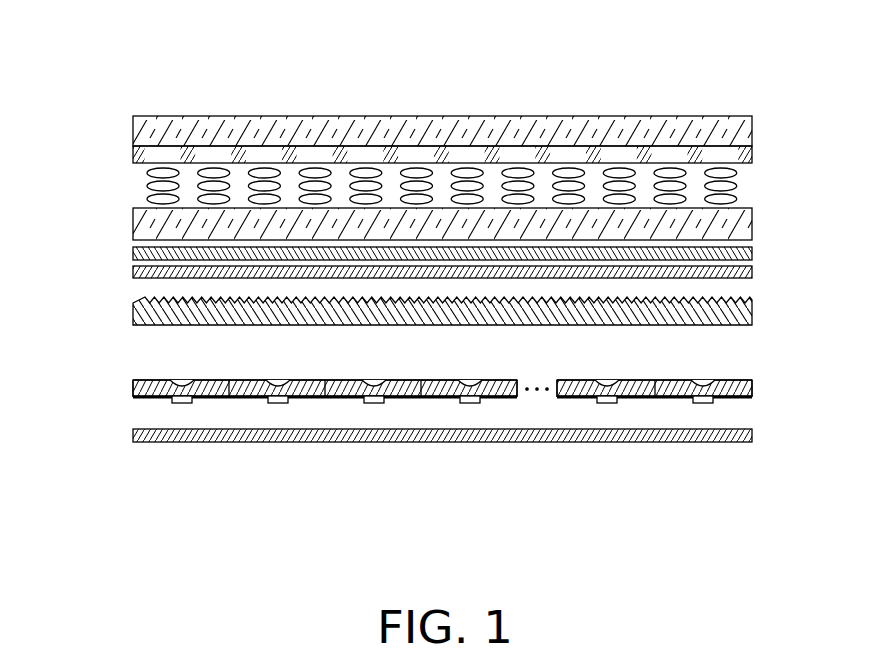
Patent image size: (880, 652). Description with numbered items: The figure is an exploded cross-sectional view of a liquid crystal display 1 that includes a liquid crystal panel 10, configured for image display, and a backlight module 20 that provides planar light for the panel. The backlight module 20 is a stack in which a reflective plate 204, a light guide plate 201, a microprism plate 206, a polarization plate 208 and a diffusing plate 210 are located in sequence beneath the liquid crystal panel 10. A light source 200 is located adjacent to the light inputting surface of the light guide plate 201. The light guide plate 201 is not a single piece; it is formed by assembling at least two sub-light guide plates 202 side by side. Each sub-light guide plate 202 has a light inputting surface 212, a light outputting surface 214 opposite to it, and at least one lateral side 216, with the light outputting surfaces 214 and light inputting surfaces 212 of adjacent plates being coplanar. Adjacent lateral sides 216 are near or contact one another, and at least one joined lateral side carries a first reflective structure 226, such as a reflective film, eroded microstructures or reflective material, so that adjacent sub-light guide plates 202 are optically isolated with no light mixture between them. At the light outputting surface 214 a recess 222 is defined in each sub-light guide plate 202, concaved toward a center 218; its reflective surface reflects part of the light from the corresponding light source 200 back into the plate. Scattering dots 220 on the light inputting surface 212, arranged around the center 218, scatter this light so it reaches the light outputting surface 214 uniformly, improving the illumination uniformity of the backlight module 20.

The liquid crystal display 1 is at (355, 32).
The liquid crystal panel 10 is at (762, 114).
The backlight module 20 is at (440, 347).
The diffusing plate 210 is at (752, 253).
The polarization plate 208 is at (752, 273).
The microprism plate 206 is at (752, 319).
The sub-light guide plate 202 is at (417, 386).
The light outputting surface 214 is at (140, 376).
The lateral side 216 is at (130, 387).
The light inputting surface 212 is at (132, 401).
The recess 222 is at (280, 381).
The scattering dots 220 is at (229, 399).
The center 218 is at (472, 402).
The first reflective structure 226 is at (519, 383).
The light guide plate 201 is at (756, 370).
The light source 200 is at (712, 402).
The reflective plate 204 is at (478, 441).